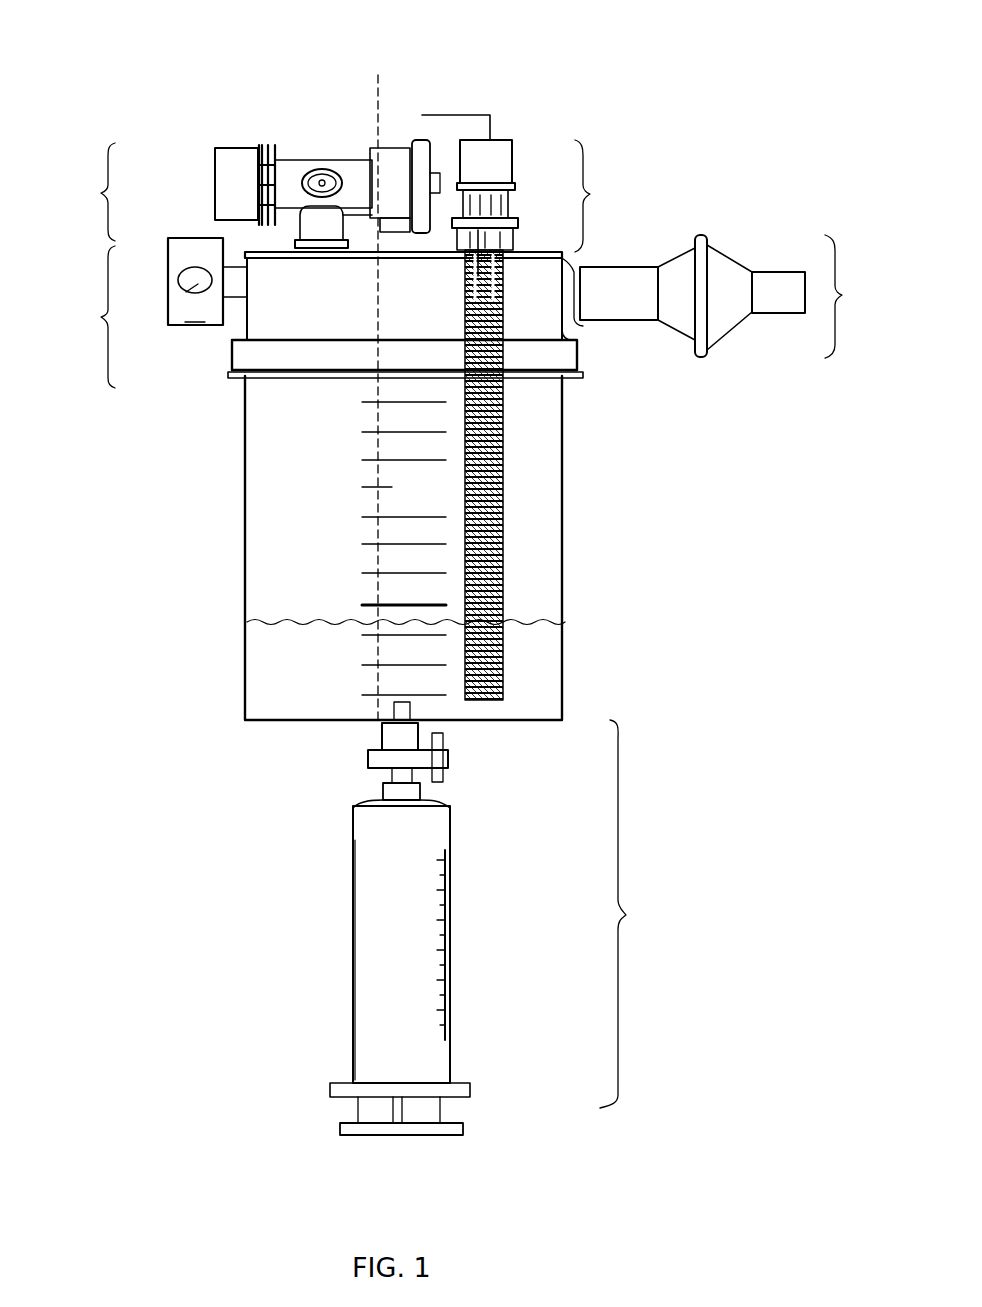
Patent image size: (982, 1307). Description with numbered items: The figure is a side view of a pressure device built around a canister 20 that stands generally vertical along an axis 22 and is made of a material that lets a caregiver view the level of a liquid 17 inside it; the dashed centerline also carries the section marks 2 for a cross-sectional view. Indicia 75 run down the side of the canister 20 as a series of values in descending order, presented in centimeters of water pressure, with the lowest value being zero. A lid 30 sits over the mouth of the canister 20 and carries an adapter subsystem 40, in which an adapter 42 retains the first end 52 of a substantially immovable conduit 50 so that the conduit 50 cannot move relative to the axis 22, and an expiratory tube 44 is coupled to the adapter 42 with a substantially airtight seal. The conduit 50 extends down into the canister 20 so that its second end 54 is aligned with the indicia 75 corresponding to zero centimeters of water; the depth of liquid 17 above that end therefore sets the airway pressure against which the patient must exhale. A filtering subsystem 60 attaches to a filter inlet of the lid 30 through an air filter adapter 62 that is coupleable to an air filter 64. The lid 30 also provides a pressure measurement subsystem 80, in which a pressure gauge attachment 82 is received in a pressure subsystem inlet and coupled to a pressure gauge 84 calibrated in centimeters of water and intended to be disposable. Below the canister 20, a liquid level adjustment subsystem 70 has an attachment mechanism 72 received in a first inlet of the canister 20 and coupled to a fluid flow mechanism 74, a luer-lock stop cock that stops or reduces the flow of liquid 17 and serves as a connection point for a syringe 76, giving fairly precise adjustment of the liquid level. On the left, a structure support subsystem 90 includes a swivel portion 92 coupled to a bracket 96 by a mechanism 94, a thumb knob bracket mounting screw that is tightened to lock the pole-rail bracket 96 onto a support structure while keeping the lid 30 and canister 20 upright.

The section line 2- 2 is at (435, 115).
The liquid 17 is at (540, 618).
The canister 20 is at (562, 545).
The axis 22 is at (377, 112).
The lid 30 is at (580, 355).
The adapter subsystem 40 is at (602, 196).
The adapter 42 is at (515, 226).
The expiratory tube 44 is at (515, 148).
The substantially immovable conduit 50 is at (505, 420).
The first end 52 is at (572, 324).
The second end 54 is at (470, 702).
The filtering subsystem 60 is at (853, 296).
The air filter adapter 62 is at (572, 270).
The air filter 64 is at (732, 325).
The liquid level adjustment subsystem 70 is at (631, 914).
The attachment mechanism 72 is at (360, 745).
The fluid flow mechanism 74 is at (355, 786).
The scale 75 is at (300, 548).
The plunger 76 is at (300, 935).
The pressure measurement subsystem 80 is at (82, 192).
The pressure gauge attachment 82 is at (292, 244).
The pressure gauge 84 is at (258, 150).
The structure support subsystem 90 is at (82, 317).
The swivel portion 92 is at (240, 295).
The mechanism 94 is at (167, 290).
The bracket 96 is at (195, 330).